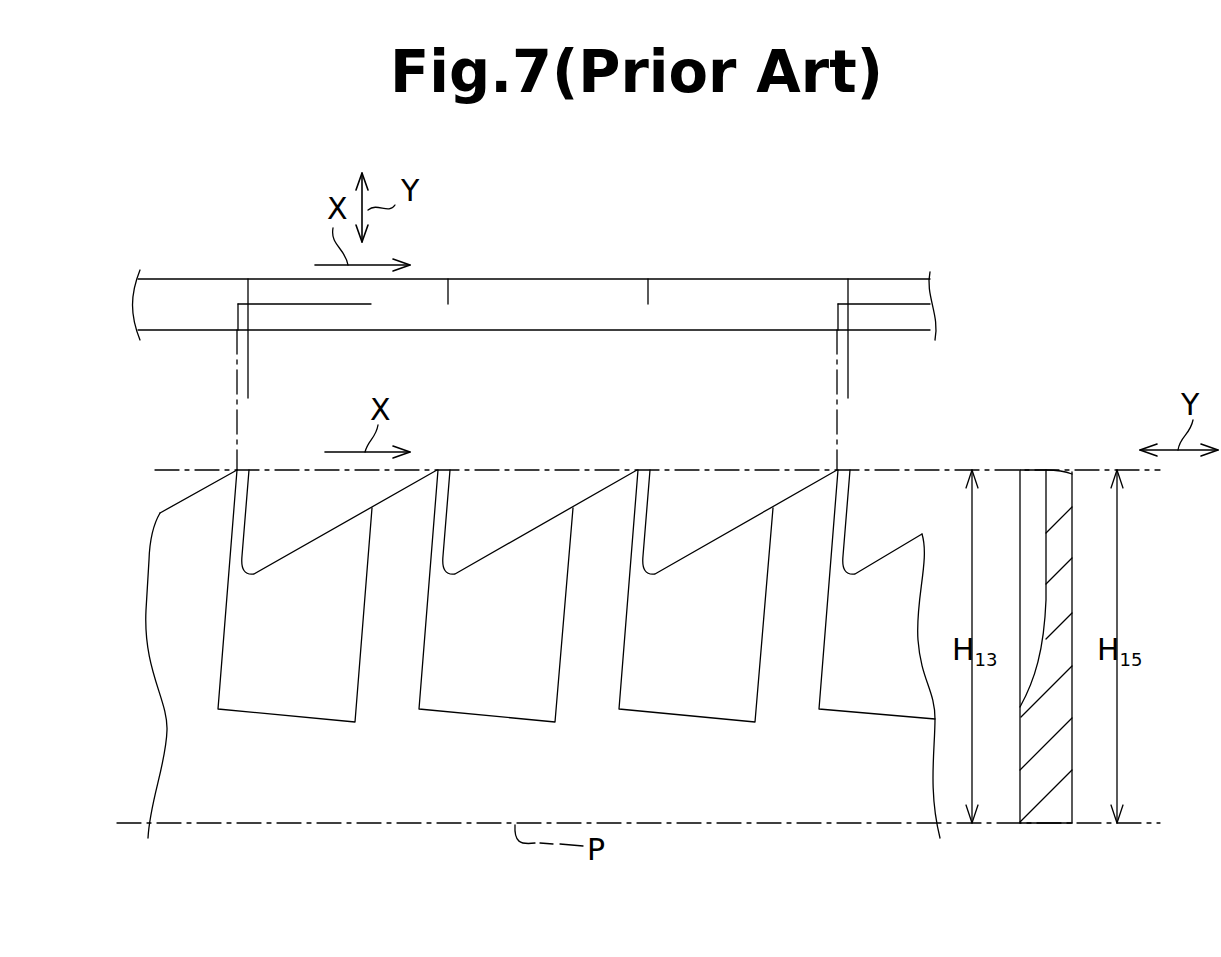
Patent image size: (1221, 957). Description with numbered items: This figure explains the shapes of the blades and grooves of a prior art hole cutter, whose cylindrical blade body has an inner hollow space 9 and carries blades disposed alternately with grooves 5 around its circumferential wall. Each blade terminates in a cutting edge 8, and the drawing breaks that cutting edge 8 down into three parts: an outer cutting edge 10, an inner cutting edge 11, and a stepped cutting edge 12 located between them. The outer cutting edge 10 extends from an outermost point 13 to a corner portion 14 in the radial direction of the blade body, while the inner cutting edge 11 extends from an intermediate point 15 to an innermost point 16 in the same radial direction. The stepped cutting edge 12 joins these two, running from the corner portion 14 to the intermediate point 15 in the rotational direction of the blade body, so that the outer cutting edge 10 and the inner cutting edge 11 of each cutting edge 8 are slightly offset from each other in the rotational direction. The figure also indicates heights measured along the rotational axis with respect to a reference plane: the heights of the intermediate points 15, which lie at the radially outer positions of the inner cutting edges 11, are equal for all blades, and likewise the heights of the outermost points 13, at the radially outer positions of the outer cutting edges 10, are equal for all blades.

The groove 5 is at (283, 703).
The cutting edge 8 is at (256, 265).
The inner hollow space 9 is at (605, 279).
The outer cutting edge 10 is at (238, 315).
The inner cutting edge 11 is at (248, 297).
The stepped cutting edge 12 is at (245, 300).
The outermost point 13 is at (247, 330).
The corner portion 14 is at (247, 305).
The intermediate point 15 is at (248, 305).
The innermost point 16 is at (246, 278).